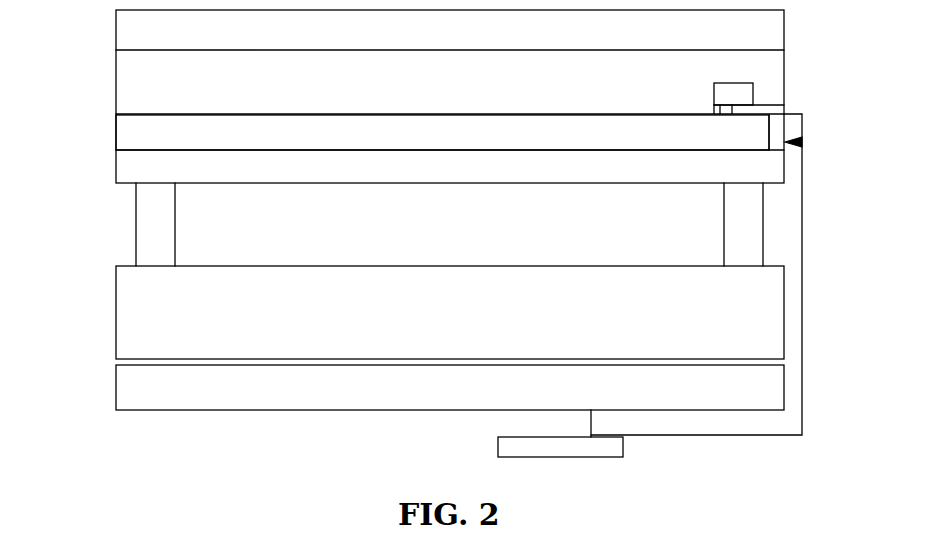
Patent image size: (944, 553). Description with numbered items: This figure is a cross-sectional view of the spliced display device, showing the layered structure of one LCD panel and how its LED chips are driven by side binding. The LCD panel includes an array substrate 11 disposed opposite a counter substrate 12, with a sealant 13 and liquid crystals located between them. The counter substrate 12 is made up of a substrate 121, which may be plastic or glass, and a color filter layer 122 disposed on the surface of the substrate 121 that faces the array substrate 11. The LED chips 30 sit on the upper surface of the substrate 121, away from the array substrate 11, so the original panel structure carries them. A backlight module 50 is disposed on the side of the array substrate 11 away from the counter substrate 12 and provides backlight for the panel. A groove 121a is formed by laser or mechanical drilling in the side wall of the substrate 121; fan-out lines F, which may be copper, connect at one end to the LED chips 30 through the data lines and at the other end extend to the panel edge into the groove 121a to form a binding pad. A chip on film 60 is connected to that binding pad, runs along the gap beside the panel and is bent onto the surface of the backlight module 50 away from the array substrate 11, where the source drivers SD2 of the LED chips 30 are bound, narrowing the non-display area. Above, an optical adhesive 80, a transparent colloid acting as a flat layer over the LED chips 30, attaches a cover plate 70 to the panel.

The cover plate 70 is at (172, 44).
The optical adhesive 80 is at (181, 88).
The counter substrate 12 is at (32, 172).
The substrate 121 is at (140, 136).
The color filter layer 122 is at (140, 168).
The groove 121a is at (802, 142).
The sealant 13 is at (166, 232).
The array substrate 11 is at (178, 320).
The backlight module 50 is at (178, 388).
The LED chips 30 is at (730, 103).
The fan-out lines F is at (773, 128).
The chip on film 60 is at (789, 319).
The source drivers SD2 is at (524, 447).